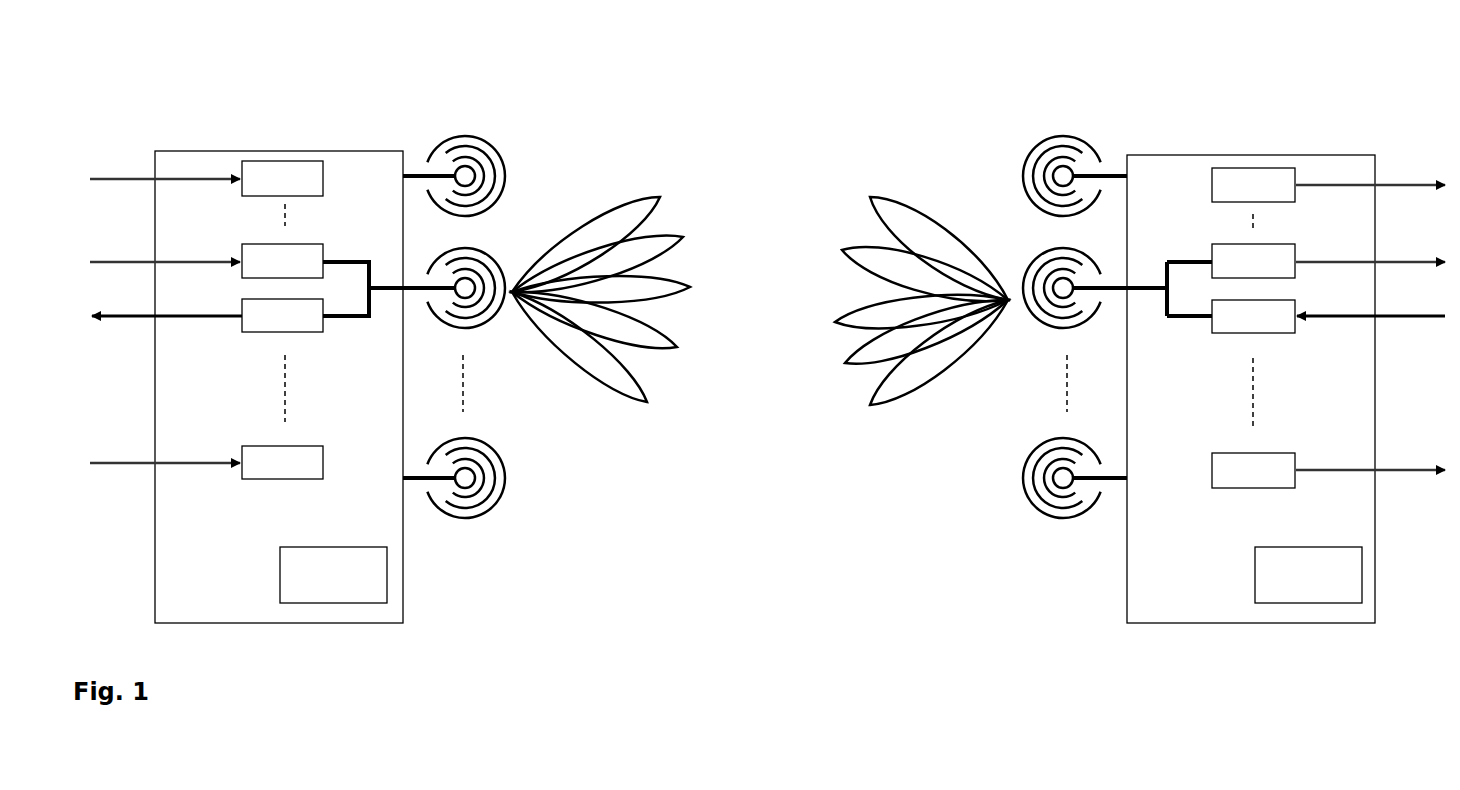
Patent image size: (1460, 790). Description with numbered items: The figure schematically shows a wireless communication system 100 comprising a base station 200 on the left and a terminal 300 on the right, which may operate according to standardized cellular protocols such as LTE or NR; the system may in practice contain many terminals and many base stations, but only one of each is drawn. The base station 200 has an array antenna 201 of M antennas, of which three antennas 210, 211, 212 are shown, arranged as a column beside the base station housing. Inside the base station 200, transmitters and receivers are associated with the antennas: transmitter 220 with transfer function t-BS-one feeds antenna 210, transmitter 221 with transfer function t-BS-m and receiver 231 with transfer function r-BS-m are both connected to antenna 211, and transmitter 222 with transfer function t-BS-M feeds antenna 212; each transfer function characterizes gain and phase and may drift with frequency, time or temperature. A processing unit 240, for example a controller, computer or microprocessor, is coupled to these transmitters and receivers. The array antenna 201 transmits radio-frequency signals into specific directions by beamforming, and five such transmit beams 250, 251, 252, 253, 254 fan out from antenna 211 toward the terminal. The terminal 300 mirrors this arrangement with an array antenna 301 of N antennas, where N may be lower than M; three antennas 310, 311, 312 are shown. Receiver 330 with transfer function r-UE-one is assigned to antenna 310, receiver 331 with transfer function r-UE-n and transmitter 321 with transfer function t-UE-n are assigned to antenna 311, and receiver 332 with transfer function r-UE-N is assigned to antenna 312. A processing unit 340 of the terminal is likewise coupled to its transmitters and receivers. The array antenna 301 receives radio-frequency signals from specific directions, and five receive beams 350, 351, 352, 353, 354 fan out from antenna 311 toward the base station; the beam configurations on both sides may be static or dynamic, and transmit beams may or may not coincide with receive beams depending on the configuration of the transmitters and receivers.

The wireless communication system 100 is at (717, 90).
The base station 200 is at (280, 151).
The array antenna 201 is at (480, 122).
The antenna 210 is at (478, 171).
The antenna 211 is at (477, 283).
The antenna 212 is at (478, 476).
The transmitter 220 is at (325, 180).
The transmitter 221 is at (325, 248).
The transmitter 222 is at (325, 470).
The receiver 231 is at (325, 333).
The processing unit 240 is at (277, 566).
The transmit beam 250 is at (660, 200).
The transmit beam 251 is at (685, 237).
The transmit beam 252 is at (692, 285).
The transmit beam 253 is at (680, 345).
The transmit beam 254 is at (650, 403).
The terminal 300 is at (1230, 155).
The array antenna 301 is at (1075, 122).
The antenna 310 is at (1050, 173).
The antenna 311 is at (1052, 282).
The antenna 312 is at (1052, 473).
The transmitter 321 is at (1297, 327).
The receiver 330 is at (1297, 195).
The receiver 331 is at (1297, 270).
The receiver 332 is at (1297, 484).
The processing unit 340 is at (1253, 576).
The receive beam 350 is at (856, 195).
The receive beam 351 is at (852, 269).
The receive beam 352 is at (840, 331).
The receive beam 353 is at (848, 370).
The receive beam 354 is at (870, 408).